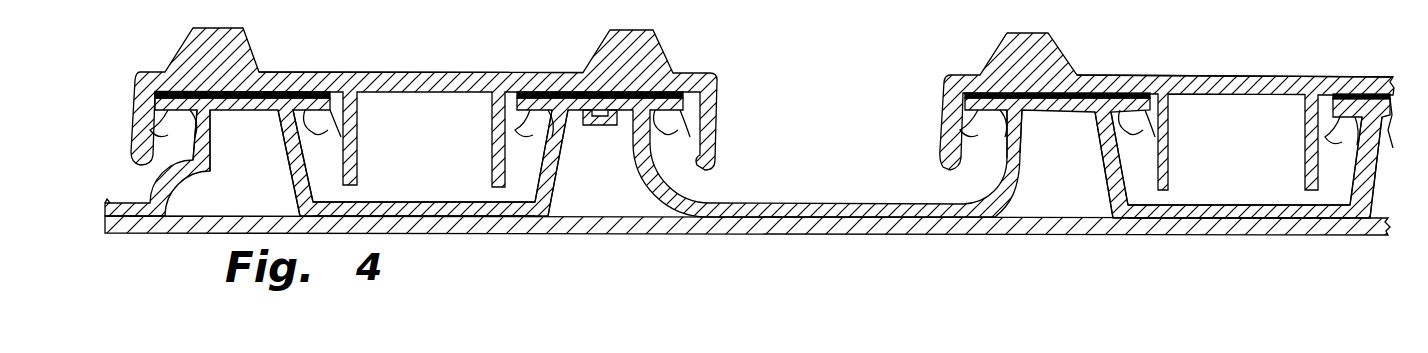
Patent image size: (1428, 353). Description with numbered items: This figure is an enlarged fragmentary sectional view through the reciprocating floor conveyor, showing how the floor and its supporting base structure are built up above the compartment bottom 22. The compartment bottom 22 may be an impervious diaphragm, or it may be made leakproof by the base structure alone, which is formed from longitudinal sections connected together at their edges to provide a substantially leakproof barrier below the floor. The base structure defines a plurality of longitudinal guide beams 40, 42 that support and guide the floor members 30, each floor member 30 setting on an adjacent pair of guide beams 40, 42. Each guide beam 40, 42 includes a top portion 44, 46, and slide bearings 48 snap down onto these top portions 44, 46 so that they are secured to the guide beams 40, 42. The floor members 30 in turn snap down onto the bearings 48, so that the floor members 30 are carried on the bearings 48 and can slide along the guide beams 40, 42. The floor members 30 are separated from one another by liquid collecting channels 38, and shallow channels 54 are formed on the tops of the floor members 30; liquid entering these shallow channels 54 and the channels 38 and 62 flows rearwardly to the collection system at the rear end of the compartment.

The compartment bottom 22 is at (627, 228).
The floor member 30 is at (452, 78).
The liquid collecting channel 38 is at (125, 187).
The longitudinal guide beam 40 is at (230, 132).
The longitudinal guide beam 42 is at (570, 117).
The top portion of guide beam 44 is at (268, 117).
The top portion of guide beam 46 is at (627, 110).
The slide bearing 48 is at (303, 82).
The shallow channel 54 is at (405, 62).
The channel 62 is at (450, 206).